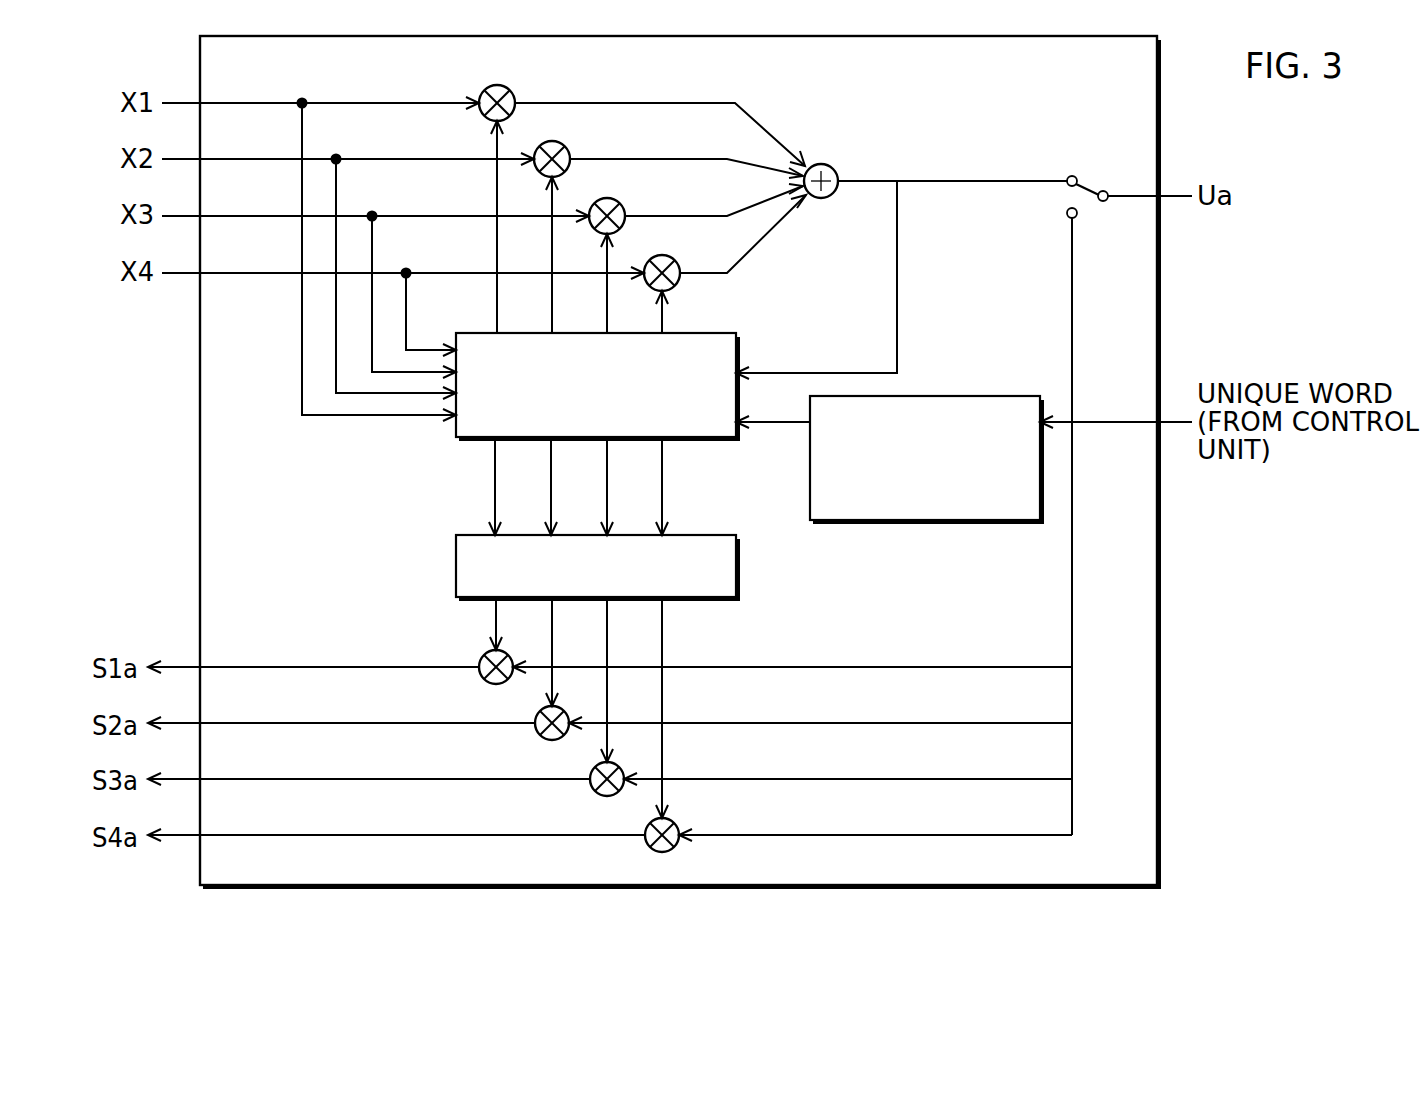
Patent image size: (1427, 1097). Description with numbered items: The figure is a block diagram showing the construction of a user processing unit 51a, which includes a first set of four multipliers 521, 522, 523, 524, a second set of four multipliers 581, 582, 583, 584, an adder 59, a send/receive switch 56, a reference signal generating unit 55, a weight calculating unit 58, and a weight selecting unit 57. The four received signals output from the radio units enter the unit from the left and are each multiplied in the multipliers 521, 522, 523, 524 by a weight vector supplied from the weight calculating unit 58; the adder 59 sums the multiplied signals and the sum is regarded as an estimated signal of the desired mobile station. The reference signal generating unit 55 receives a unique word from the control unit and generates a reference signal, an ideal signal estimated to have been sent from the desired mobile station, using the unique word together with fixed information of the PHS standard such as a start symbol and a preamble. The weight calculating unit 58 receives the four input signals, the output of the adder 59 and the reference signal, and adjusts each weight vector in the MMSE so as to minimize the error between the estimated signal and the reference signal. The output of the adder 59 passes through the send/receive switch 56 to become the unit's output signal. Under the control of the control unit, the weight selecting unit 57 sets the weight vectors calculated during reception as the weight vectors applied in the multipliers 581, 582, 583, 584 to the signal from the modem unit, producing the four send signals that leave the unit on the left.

The user processing unit 51a is at (680, 462).
The multiplier 521 is at (480, 117).
The multiplier 522 is at (563, 143).
The multiplier 523 is at (618, 200).
The multiplier 524 is at (674, 257).
The adder 59 is at (836, 169).
The send/receive switch 56 is at (1081, 186).
The weight calculating unit 58 is at (705, 332).
The reference signal generating unit 55 is at (957, 394).
The weight selecting unit 57 is at (739, 571).
The multiplier 581 is at (524, 633).
The multiplier 582 is at (577, 693).
The multiplier 583 is at (631, 750).
The multiplier 584 is at (672, 819).